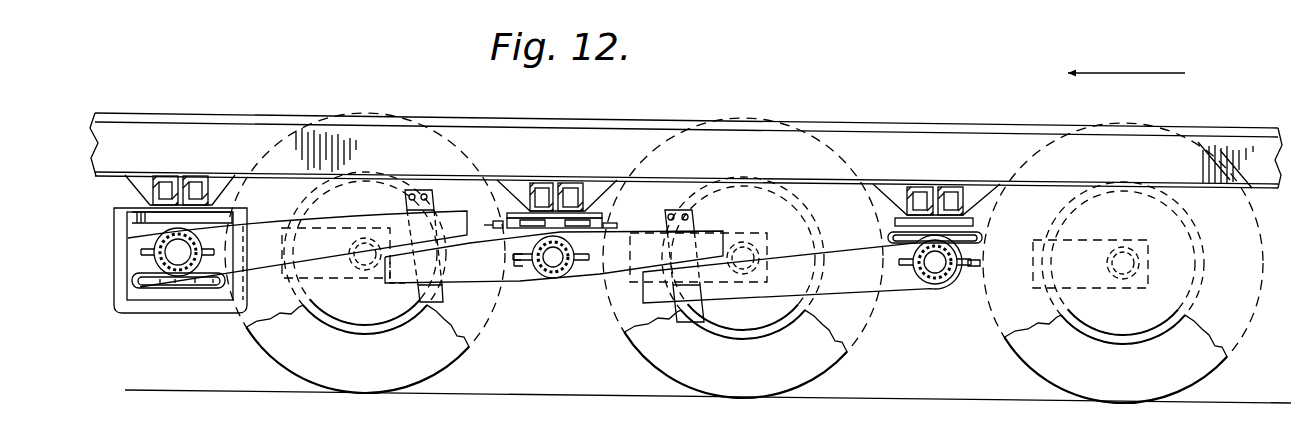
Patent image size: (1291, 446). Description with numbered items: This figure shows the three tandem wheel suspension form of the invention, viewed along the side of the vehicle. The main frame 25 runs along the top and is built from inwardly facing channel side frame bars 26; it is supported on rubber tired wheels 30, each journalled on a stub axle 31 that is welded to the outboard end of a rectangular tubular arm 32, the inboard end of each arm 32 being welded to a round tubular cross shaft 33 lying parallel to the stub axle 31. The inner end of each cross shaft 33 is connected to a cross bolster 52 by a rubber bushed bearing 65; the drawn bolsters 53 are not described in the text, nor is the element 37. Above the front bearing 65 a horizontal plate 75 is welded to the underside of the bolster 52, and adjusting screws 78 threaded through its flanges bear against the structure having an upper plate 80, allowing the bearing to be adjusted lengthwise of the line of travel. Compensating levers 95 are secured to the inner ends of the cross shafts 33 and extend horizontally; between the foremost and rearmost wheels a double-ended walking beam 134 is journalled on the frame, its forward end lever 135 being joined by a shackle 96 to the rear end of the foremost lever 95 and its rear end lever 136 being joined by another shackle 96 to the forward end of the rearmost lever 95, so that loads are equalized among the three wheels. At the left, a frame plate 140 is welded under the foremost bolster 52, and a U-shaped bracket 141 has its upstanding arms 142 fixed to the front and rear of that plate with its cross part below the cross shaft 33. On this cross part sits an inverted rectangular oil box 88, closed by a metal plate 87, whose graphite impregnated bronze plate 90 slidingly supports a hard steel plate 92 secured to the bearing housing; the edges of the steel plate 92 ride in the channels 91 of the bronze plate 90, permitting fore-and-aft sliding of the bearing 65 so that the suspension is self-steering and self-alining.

The main frame 25 is at (1240, 127).
The main longitudinal side frame bar 26 is at (1205, 187).
The rubber tired wheel 30 is at (466, 371).
The stub axle 31 is at (760, 238).
The arm 32 is at (729, 258).
The cross shaft 33 is at (153, 251).
The axle housing 37 is at (352, 281).
The cross bolster 52 is at (197, 171).
The frame bracket 53 is at (545, 193).
The bearing 65 is at (504, 262).
The horizontal plate 75 is at (497, 206).
The adjusting screw 78 is at (493, 217).
The upper plate 80 is at (578, 202).
The metal plate 87 is at (178, 300).
The rectangular oil box 88 is at (995, 231).
The bottom plate 90 is at (215, 290).
The channel 91 is at (137, 284).
The hard steel plate 92 is at (165, 292).
The compensating lever 95 is at (337, 221).
The shackle 96 is at (470, 309).
The walking beam 134 is at (484, 287).
The forward end lever 135 is at (394, 290).
The rear end lever 136 is at (736, 226).
The frame plate 140 is at (130, 212).
The U-shaped bracket 141 is at (110, 314).
The upstanding arm 142 is at (114, 232).